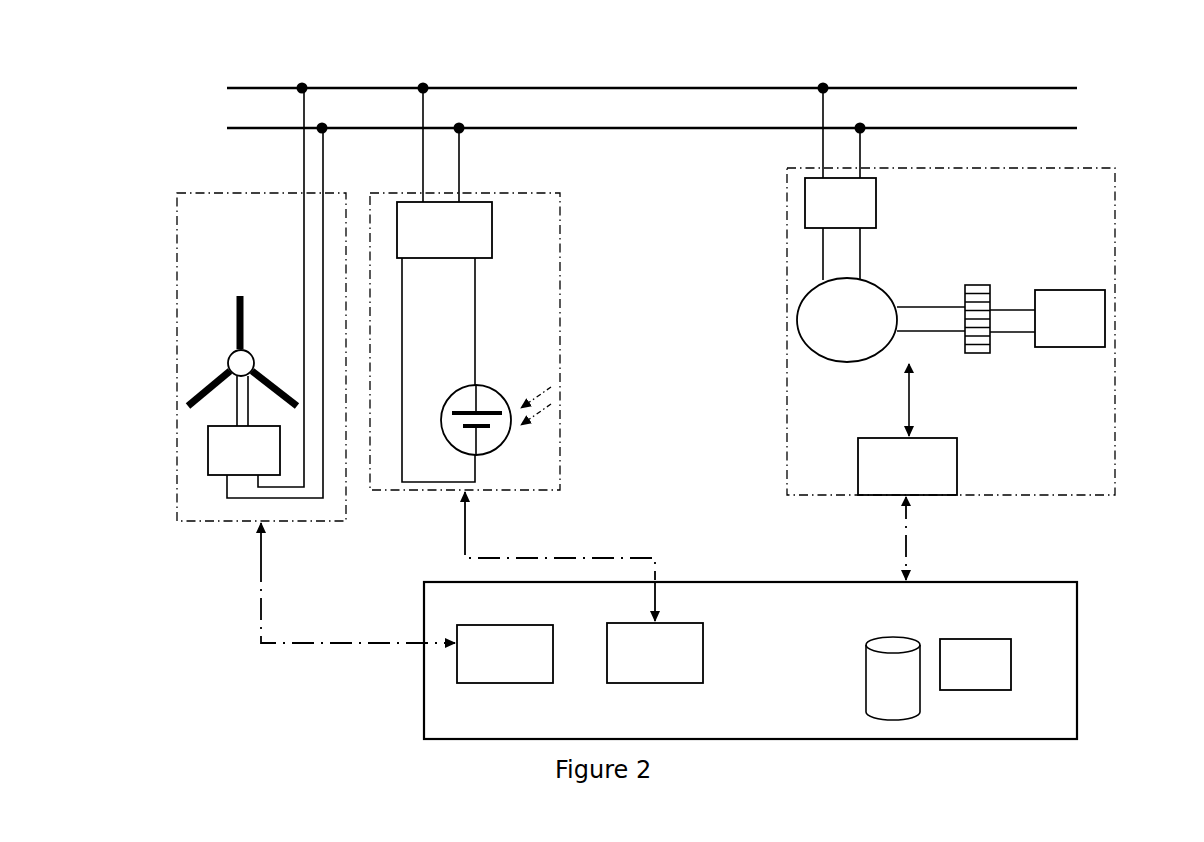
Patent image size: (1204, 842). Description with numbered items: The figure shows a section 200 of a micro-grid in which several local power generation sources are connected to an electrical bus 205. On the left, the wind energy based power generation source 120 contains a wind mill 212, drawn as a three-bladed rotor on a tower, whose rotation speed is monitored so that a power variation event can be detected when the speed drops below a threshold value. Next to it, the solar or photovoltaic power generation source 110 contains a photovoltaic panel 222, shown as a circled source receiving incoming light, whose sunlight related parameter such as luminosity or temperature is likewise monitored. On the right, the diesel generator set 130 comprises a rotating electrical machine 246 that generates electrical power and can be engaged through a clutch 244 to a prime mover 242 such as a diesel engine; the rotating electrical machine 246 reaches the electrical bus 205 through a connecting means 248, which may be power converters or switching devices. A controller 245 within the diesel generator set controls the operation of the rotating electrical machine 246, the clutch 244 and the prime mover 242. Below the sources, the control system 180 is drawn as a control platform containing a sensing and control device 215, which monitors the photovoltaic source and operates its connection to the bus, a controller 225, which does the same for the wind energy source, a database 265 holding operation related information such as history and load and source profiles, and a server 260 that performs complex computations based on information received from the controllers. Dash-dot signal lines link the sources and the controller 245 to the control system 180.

The section of the micro-grid 200 is at (1161, 34).
The electrical bus 205 is at (1058, 74).
The wind energy based power generation source 120 is at (261, 304).
The wind mill 212 is at (249, 314).
The solar or photovoltaic power generation source 110 is at (465, 289).
The photovoltaic panel 222 is at (485, 381).
The diesel generator set 130 is at (951, 291).
The connecting means 248 is at (882, 206).
The rotating electrical machine 246 is at (886, 288).
The clutch 244 is at (982, 283).
The prime mover 242 is at (1054, 291).
The controller 245 is at (962, 472).
The control system 180 is at (750, 645).
The sensing and control device 215 is at (501, 621).
The controller 225 is at (670, 621).
The database 265 is at (892, 631).
The server 260 is at (995, 631).